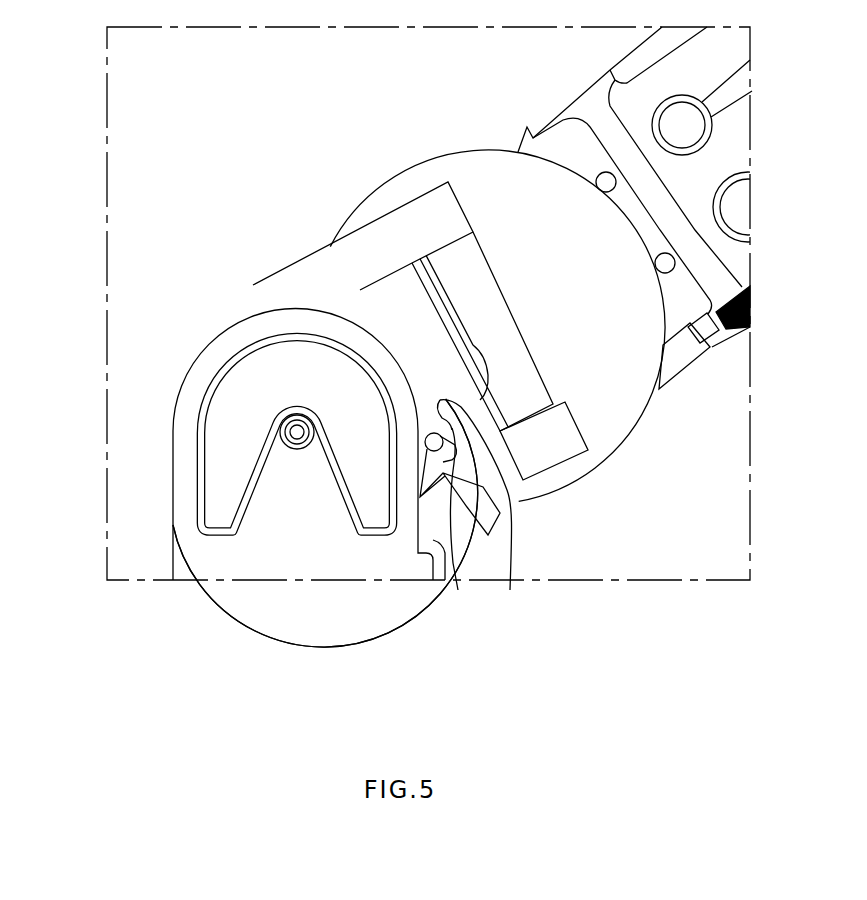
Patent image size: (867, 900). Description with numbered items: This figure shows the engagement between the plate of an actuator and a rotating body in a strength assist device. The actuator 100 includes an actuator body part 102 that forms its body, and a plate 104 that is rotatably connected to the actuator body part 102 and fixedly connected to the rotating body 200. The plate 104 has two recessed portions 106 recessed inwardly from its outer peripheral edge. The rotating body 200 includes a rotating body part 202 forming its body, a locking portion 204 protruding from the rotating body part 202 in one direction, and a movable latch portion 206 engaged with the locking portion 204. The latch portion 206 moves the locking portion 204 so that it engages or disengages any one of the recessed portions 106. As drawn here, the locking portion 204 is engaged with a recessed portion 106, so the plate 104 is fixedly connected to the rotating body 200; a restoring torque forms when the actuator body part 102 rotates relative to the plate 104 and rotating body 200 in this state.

The actuator 100 is at (124, 423).
The actuator body part 102 is at (298, 563).
The plate 104 is at (236, 311).
The recessed portion 106 is at (520, 510).
The rotating body 200 is at (470, 114).
The rotating body part 202 is at (411, 183).
The locking portion 204 is at (448, 552).
The latch portion 206 is at (499, 540).